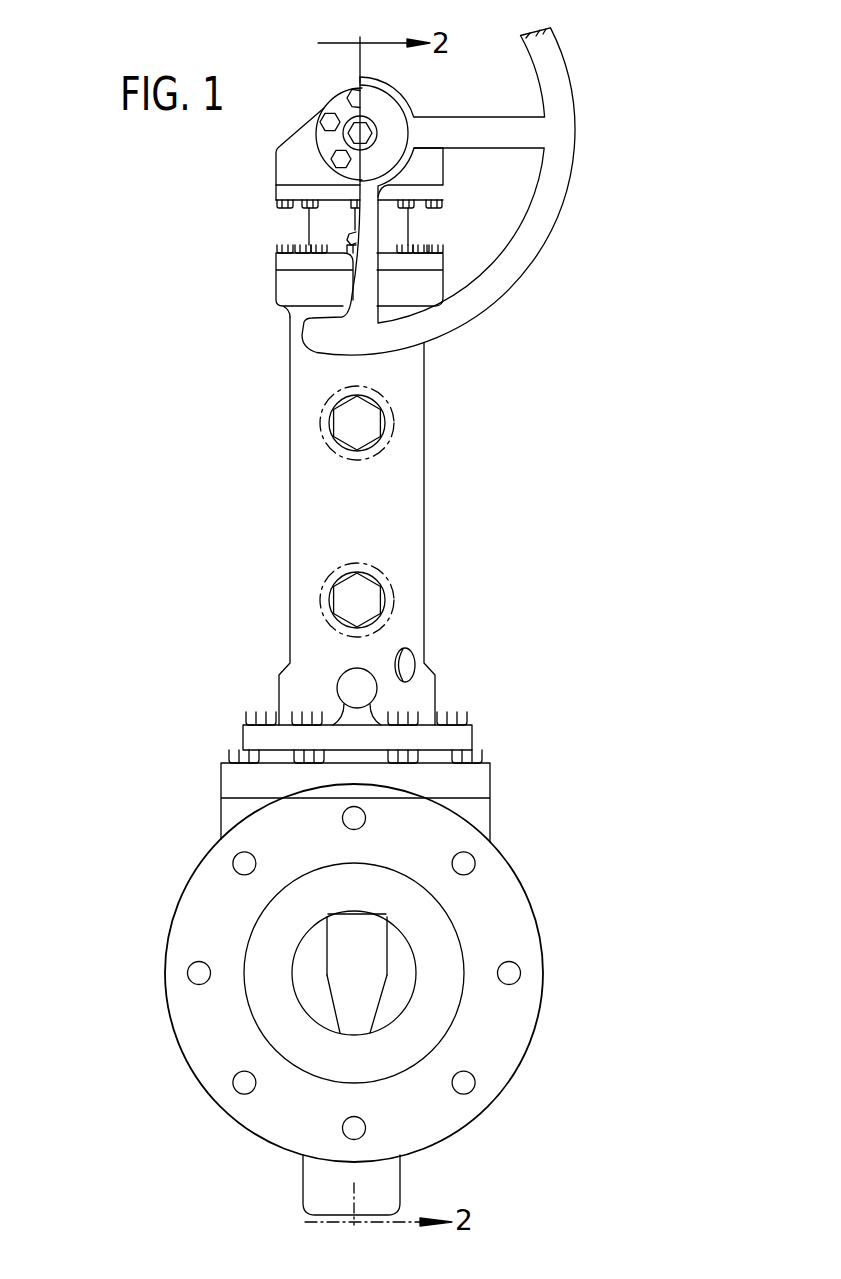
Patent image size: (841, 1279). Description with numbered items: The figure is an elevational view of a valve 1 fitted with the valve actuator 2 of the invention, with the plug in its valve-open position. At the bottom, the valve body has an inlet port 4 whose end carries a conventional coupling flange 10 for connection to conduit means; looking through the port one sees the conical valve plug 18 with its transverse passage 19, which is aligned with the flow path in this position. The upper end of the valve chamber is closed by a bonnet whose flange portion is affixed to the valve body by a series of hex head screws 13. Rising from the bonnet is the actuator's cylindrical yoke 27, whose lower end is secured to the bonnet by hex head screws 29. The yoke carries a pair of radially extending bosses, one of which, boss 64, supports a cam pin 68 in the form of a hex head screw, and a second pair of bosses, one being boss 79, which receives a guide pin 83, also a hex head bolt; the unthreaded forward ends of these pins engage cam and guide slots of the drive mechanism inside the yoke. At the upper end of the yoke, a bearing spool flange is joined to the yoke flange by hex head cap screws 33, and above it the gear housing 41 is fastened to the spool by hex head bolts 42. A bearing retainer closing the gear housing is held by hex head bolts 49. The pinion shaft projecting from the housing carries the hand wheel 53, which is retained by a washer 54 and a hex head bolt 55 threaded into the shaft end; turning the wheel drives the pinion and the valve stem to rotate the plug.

The valve 1 is at (552, 938).
The valve actuator 2 is at (428, 552).
The inlet port 4 is at (396, 946).
The coupling flange 10 is at (505, 888).
The hex head screws 13 is at (245, 758).
The valve plug 18 is at (308, 943).
The transverse passage 19 is at (337, 978).
The yoke 27 is at (417, 478).
The hex head screws 29 is at (243, 715).
The hex head cap screws 33 is at (278, 249).
The gear housing 41 is at (280, 141).
The hex head bolts 42 is at (277, 203).
The hex head bolts 49 is at (352, 96).
The hand wheel 53 is at (548, 220).
The washer 54 is at (373, 120).
The hex head bolt 55 is at (366, 133).
The radially extending boss 64 is at (368, 567).
The cam pin 68 is at (373, 602).
The radially extending boss 79 is at (378, 397).
The guide pin 83 is at (375, 425).